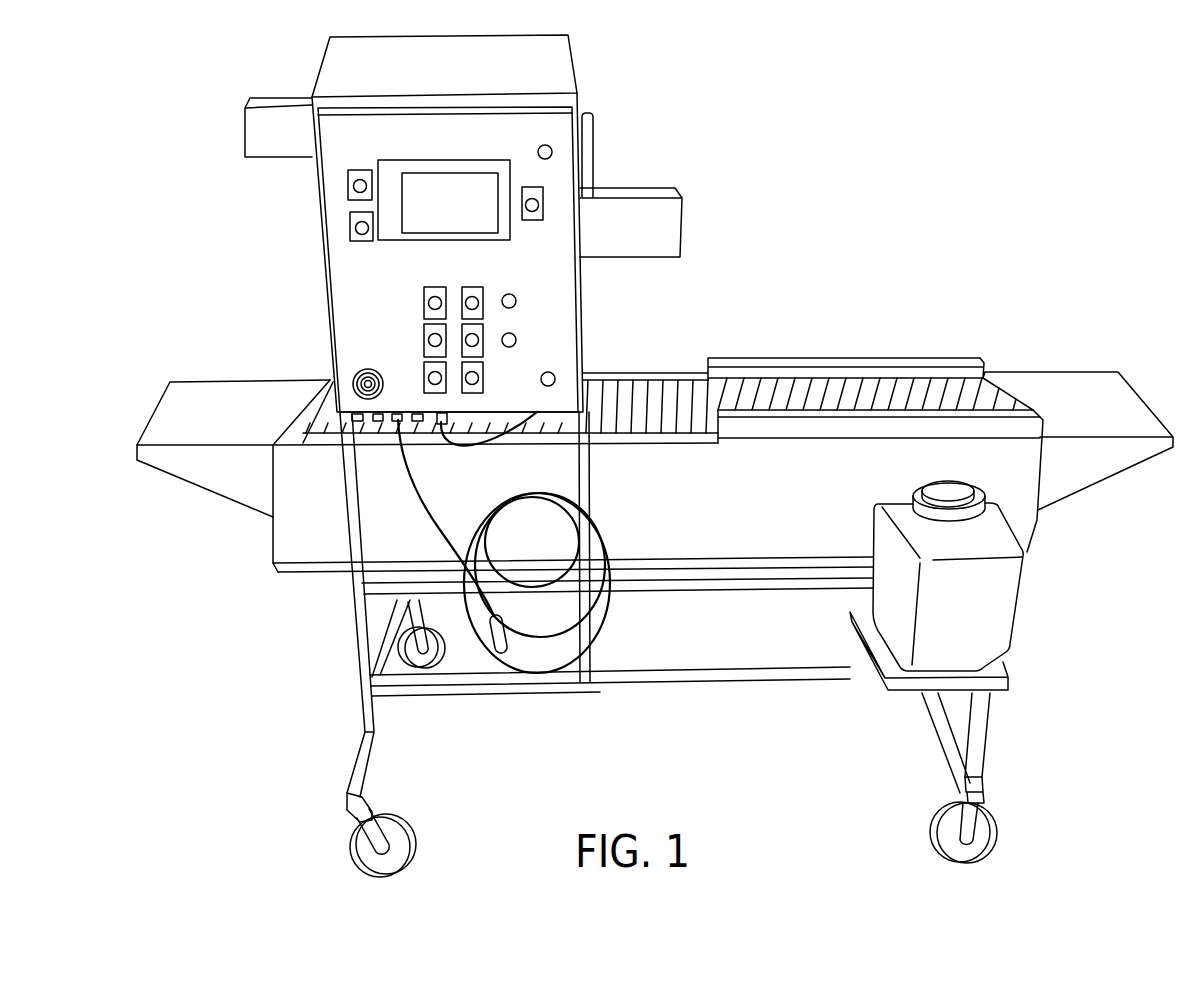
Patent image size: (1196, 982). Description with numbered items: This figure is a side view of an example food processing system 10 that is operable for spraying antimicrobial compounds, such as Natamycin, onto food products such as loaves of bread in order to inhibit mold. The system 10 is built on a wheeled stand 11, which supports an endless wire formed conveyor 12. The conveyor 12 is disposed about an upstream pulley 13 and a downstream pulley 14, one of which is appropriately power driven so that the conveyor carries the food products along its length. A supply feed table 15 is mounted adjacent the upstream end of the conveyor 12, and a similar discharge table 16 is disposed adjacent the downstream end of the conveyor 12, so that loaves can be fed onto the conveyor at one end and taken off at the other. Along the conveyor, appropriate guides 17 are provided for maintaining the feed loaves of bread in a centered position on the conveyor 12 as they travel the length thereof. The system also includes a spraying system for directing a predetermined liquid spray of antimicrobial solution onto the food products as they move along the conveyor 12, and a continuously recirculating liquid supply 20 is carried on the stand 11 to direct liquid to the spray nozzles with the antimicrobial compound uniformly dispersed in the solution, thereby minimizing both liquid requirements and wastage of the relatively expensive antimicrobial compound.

The food processing system 10 is at (746, 172).
The wheeled stand 11 is at (370, 663).
The endless wire formed conveyor 12 is at (752, 398).
The upstream pulley 13 is at (992, 397).
The downstream pulley 14 is at (303, 407).
The supply feed table 15 is at (1077, 403).
The discharge table 16 is at (213, 413).
The guides 17 is at (863, 418).
The continuously recirculating liquid supply 20 is at (973, 600).